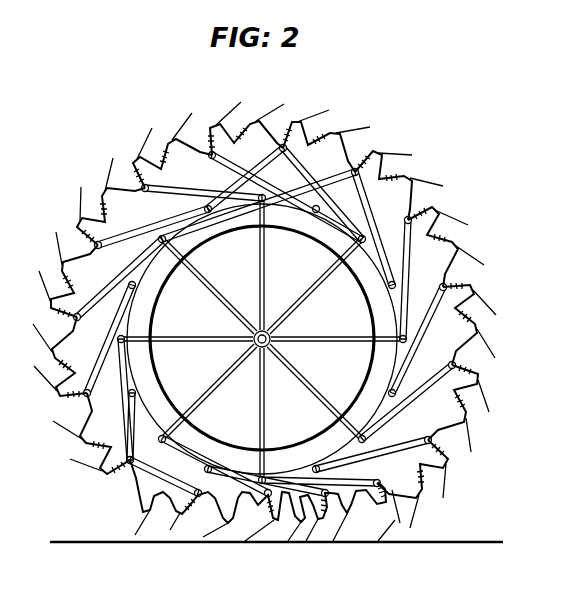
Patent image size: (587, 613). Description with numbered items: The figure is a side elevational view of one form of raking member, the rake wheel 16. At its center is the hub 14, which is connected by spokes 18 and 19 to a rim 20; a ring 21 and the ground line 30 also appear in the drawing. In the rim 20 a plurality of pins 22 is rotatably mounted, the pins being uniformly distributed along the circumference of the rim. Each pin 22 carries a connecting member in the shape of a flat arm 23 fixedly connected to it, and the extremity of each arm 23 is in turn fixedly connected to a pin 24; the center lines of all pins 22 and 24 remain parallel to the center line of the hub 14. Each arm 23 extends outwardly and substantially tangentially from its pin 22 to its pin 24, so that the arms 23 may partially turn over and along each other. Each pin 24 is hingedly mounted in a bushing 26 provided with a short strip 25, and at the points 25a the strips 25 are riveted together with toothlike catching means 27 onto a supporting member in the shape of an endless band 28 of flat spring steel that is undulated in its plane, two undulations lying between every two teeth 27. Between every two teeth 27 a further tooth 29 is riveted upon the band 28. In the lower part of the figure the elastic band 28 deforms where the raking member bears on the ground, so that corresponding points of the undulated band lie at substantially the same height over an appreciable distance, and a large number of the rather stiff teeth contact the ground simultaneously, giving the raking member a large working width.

The hub 14 is at (272, 346).
The rake wheel 16 is at (160, 358).
The spokes 18 is at (268, 270).
The spokes 19 is at (205, 285).
The rim 20 is at (328, 440).
The ring 21 is at (170, 275).
The pins 22 is at (395, 322).
The flat arm 23 is at (368, 222).
The pin 24 is at (120, 256).
The short strip 25 is at (450, 300).
The riveting points 25a is at (250, 92).
The bushing 26 is at (440, 272).
The toothlike catching means 27 is at (482, 394).
The endless band 28 is at (462, 368).
The tooth 29 is at (478, 438).
The ground 30 is at (386, 545).